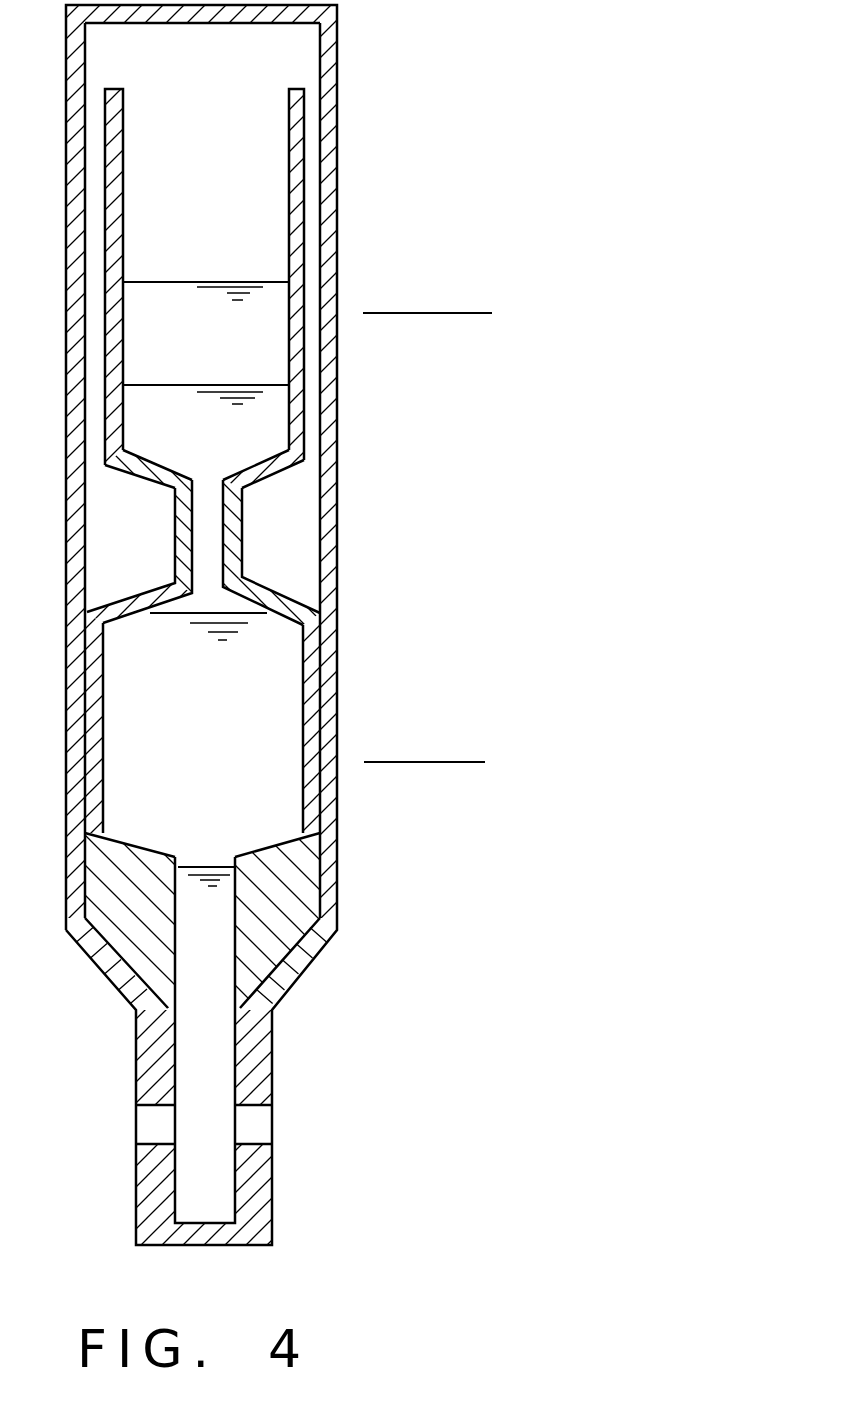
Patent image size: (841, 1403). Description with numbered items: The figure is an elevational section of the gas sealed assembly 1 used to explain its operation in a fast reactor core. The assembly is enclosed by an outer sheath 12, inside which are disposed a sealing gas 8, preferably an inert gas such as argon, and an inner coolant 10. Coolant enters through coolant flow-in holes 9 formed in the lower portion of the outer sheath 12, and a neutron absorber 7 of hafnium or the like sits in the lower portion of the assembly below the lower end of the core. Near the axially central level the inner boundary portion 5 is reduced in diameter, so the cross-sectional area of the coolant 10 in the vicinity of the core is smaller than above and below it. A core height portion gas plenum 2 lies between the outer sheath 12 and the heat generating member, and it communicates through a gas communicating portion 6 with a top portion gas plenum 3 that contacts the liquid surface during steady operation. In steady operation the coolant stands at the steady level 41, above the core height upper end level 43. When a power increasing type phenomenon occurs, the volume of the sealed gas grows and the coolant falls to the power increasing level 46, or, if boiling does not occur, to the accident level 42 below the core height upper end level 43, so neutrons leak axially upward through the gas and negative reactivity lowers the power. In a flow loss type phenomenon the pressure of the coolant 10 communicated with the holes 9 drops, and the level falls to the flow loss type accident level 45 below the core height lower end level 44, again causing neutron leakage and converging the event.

The gas sealed assembly 1 is at (337, 37).
The core height portion gas plenum 2 is at (297, 582).
The top portion gas plenum 3 is at (265, 78).
The inner boundary portion 5 is at (205, 536).
The gas communicating portion 6 is at (305, 437).
The neutron absorber 7 is at (288, 945).
The sealing gas 8 is at (265, 183).
The coolant flow-in holes 9 is at (257, 1128).
The inner coolant 10 is at (190, 1052).
The outer sheath 12 is at (337, 648).
The steady level 41 is at (255, 282).
The accident level 42 is at (270, 372).
The core height upper end level 43 is at (425, 313).
The core height lower end level 44 is at (415, 762).
The flow loss type accident level 45 is at (203, 865).
The power increasing level 46 is at (250, 600).